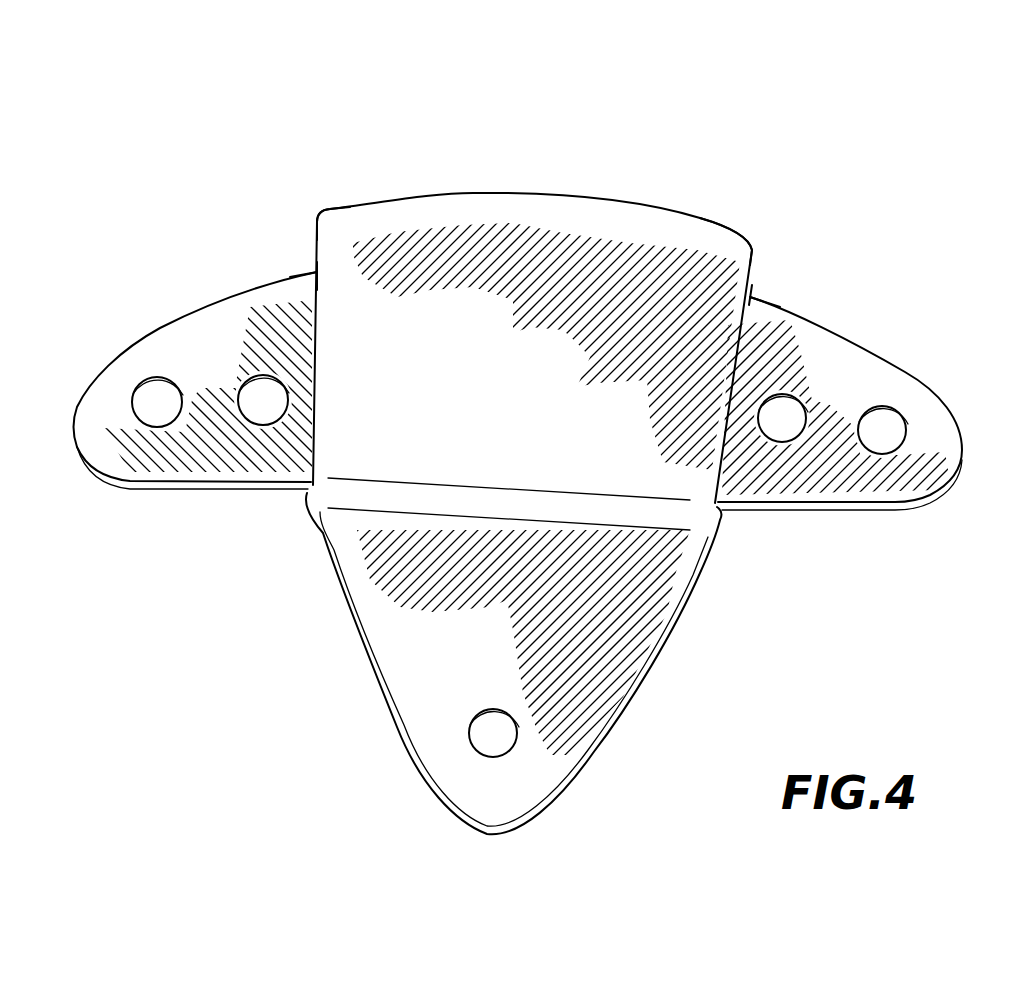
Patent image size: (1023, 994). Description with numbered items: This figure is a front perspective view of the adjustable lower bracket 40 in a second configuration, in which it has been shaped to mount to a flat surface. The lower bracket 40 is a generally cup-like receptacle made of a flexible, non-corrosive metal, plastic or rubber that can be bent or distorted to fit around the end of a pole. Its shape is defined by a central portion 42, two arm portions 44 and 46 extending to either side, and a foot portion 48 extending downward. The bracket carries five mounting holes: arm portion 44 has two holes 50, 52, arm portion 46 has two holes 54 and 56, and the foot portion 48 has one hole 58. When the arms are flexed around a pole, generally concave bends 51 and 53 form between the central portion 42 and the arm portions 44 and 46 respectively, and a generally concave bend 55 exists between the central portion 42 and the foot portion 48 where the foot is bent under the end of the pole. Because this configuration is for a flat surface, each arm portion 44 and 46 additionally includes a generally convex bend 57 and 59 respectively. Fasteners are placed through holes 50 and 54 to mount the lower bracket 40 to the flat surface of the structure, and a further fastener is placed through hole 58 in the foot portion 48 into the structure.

The lower bracket 40 is at (637, 138).
The central portion 42 is at (517, 210).
The arm portion 44 is at (192, 333).
The arm portion 46 is at (822, 348).
The foot portion 48 is at (397, 671).
The hole 50 is at (137, 380).
The generally concave bend 51 is at (323, 201).
The hole 52 is at (252, 372).
The generally concave bend 53 is at (753, 237).
The hole 54 is at (900, 405).
The generally concave bend 55 is at (373, 520).
The hole 56 is at (807, 398).
The generally convex bend 57 is at (310, 269).
The hole 58 is at (470, 747).
The generally convex bend 59 is at (758, 291).